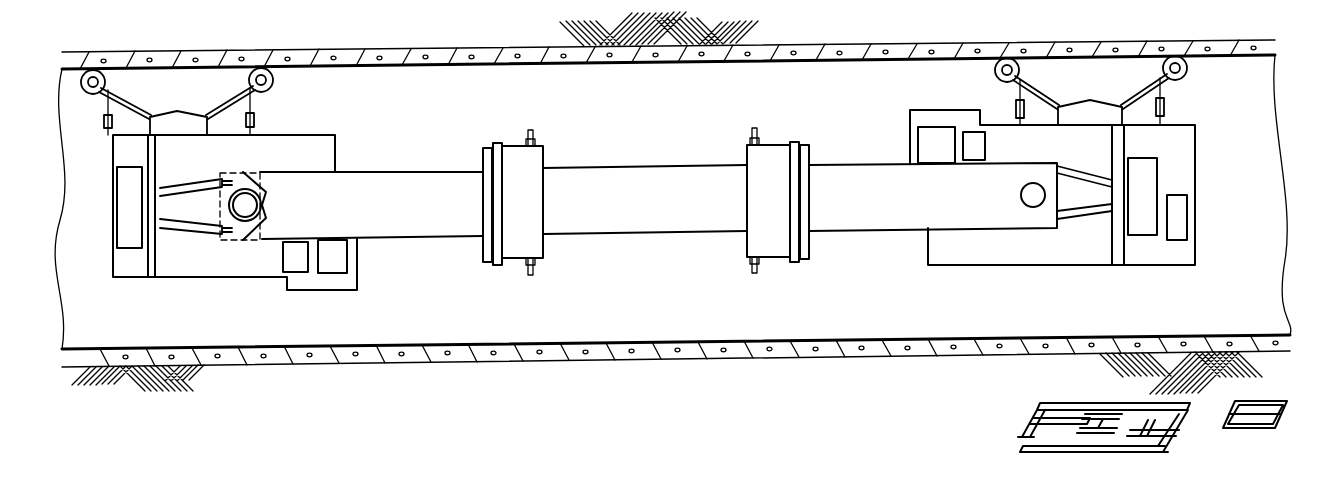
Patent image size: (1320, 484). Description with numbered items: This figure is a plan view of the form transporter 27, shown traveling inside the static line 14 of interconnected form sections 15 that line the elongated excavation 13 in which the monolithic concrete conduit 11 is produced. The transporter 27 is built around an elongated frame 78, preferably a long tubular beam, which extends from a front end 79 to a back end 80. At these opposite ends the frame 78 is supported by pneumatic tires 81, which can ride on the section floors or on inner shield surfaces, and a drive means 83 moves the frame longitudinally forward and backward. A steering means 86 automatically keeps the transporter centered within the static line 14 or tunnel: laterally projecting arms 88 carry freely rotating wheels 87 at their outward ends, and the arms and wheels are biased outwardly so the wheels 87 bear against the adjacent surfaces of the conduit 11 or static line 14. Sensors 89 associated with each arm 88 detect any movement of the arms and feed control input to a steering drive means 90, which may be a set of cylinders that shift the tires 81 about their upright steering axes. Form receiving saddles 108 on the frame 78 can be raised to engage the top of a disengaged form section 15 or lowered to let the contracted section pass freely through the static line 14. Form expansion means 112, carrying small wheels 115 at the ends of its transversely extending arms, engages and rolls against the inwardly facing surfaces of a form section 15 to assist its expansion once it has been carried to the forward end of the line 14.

The monolithic concrete conduit 11 is at (1052, 46).
The excavation 13 is at (690, 30).
The static line 14 is at (867, 43).
The form section 15 is at (1140, 46).
The form transporter 27 is at (1200, 140).
The frame 78 is at (887, 180).
The front end 79 is at (296, 186).
The back end 80 is at (1060, 175).
The pneumatic tires 81 is at (252, 205).
The drive means 83 is at (137, 185).
The steering means 86 is at (273, 83).
The wheels 87 is at (94, 94).
The arms 88 is at (140, 102).
The sensors 89 is at (103, 122).
The steering drive means 90 is at (215, 234).
The form receiving saddles 108 is at (752, 148).
The form expansion means 112 is at (536, 142).
The small wheels 115 is at (531, 130).